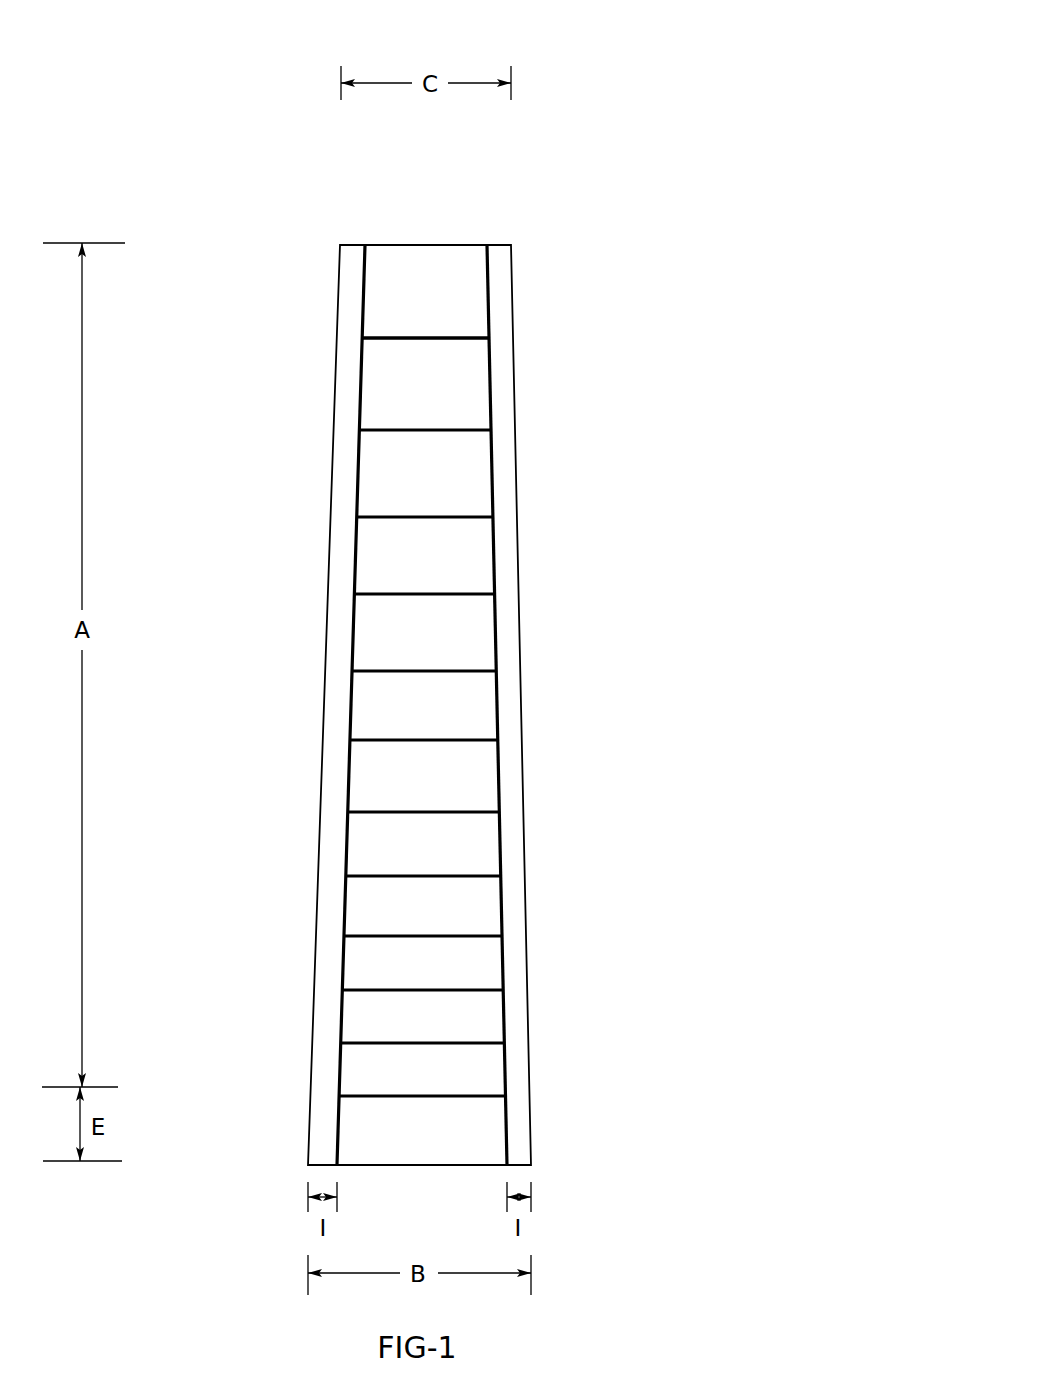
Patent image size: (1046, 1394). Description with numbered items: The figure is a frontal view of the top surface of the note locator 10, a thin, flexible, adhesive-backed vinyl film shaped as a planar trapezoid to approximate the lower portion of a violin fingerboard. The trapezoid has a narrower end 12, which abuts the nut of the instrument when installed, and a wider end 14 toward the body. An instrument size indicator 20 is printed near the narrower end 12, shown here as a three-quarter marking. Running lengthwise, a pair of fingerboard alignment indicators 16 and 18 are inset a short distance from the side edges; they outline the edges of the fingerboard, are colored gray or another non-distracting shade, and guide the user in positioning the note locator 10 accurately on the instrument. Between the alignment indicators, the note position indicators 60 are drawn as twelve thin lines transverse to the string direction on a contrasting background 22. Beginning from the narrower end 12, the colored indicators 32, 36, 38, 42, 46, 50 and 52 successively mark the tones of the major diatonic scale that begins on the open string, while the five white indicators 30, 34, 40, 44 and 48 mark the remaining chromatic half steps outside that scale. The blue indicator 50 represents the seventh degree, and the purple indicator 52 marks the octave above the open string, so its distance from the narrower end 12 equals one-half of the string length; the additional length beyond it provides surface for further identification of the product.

The note locator 10 is at (685, 80).
The narrower end 12 is at (300, 250).
The wider end 14 is at (288, 1132).
The fingerboard alignment indicator 16 is at (366, 244).
The fingerboard alignment indicator 18 is at (488, 245).
The instrument size indicator 20 is at (407, 270).
The contrasting background 22 is at (473, 295).
The white note position indicator 30 is at (489, 338).
The colored note position indicator 32 is at (491, 430).
The white note position indicator 34 is at (493, 517).
The colored note position indicator 36 is at (495, 594).
The colored note position indicator 38 is at (496, 671).
The white note position indicator 40 is at (498, 740).
The colored note position indicator 42 is at (499, 812).
The white note position indicator 44 is at (501, 876).
The colored note position indicator 46 is at (502, 936).
The white note position indicator 48 is at (503, 990).
The blue note position indicator 50 is at (504, 1043).
The purple note position indicator 52 is at (506, 1096).
The note position indicators 60 is at (797, 432).